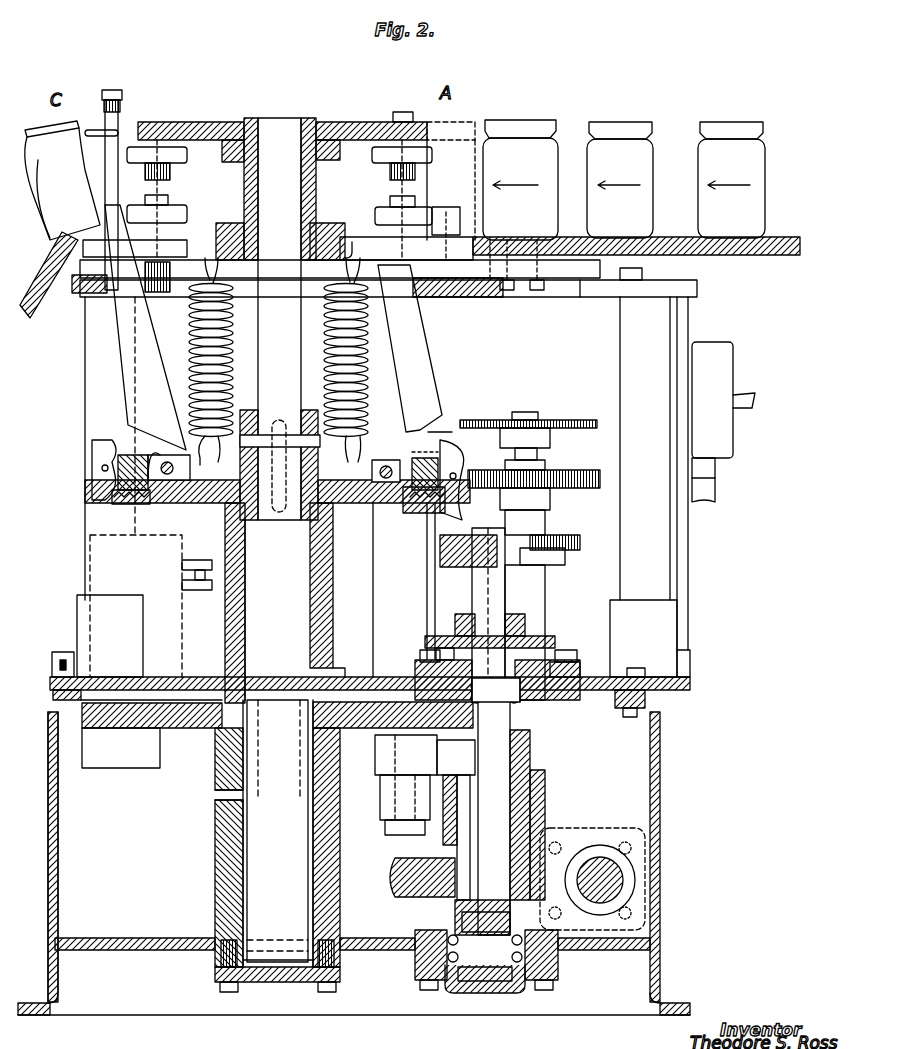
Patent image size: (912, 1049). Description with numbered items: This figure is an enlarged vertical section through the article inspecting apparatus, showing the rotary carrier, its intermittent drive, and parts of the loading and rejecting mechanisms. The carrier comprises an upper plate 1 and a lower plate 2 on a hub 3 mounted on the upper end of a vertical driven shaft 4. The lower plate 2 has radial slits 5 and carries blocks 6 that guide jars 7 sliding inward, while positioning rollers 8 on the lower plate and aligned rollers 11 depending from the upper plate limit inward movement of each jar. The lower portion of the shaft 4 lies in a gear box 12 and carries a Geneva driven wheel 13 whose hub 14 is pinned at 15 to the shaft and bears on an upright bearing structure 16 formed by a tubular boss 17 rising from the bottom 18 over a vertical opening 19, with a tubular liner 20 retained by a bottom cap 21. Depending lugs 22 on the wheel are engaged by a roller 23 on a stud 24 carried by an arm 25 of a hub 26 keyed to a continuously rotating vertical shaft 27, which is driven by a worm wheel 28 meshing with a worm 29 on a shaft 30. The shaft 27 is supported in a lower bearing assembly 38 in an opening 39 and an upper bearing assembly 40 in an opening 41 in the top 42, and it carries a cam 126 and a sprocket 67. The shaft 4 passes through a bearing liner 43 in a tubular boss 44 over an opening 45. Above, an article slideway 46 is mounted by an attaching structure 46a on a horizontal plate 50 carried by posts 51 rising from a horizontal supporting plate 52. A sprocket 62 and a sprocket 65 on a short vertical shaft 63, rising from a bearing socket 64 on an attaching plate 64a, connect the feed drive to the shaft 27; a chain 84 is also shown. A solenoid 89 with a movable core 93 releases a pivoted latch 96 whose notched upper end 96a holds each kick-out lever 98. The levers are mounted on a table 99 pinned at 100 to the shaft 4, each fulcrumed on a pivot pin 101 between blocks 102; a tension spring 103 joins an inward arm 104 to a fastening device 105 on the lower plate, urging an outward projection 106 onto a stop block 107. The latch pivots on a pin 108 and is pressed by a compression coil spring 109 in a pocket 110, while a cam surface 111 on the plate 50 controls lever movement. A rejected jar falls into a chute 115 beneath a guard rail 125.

The upper plate 1 is at (330, 122).
The lower plate 2 is at (334, 261).
The hub 3 is at (317, 190).
The driven shaft 4 is at (279, 319).
The slits 5 is at (176, 257).
The blocks 6 is at (128, 218).
The jars 7 is at (560, 103).
The article positioning rollers 8 is at (183, 215).
The article contacting rollers 11 is at (186, 155).
The gear box 12 is at (60, 836).
The driven wheel 13 is at (193, 728).
The hub 14 is at (214, 780).
The pin 15 is at (214, 800).
The bearing structure 16 is at (206, 882).
The tubular boss 17 is at (342, 928).
The bottom 18 is at (136, 950).
The vertical opening 19 is at (236, 923).
The tubular liner 20 is at (247, 877).
The bottom cap 21 is at (291, 983).
The lugs 22 is at (135, 766).
The roller 23 is at (383, 760).
The stud 24 is at (400, 793).
The projecting arm 25 is at (392, 820).
The hub 26 is at (532, 786).
The vertical shaft 27 is at (488, 600).
The worm wheel 28 is at (396, 876).
The worm 29 is at (640, 878).
The shaft 30 is at (600, 860).
The anti-friction bearing assembly 38 is at (452, 935).
The opening 39 is at (445, 992).
The upper anti-friction bearing assembly 40 is at (518, 710).
The opening 41 is at (525, 700).
The top 42 is at (385, 677).
The bearing liner 43 is at (309, 596).
The tubular boss 44 is at (335, 630).
The opening 45 is at (328, 667).
The article slideway 46 is at (748, 256).
The attaching structure 46a is at (562, 272).
The horizontal plate 50 is at (462, 298).
The posts 51 is at (85, 354).
The horizontal supporting plate 52 is at (690, 692).
The sprocket 62 is at (568, 422).
The short vertical shaft 63 is at (535, 450).
The bearing socket 64 is at (548, 592).
The attaching plate 64a is at (582, 672).
The sprocket 65 is at (562, 540).
The sprocket 67 is at (566, 560).
The chain 84 is at (572, 485).
The solenoid 89 is at (129, 606).
The movable core 93 is at (194, 588).
The pivoted latch 96 is at (95, 470).
The notched upper end portion 96a is at (450, 430).
The kick-out lever 98 is at (128, 376).
The table 99 is at (355, 508).
The pin 100 is at (298, 440).
The pivot pin 101 is at (167, 462).
The blocks 102 is at (163, 503).
The tension spring 103 is at (193, 355).
The inwardly extending arm 104 is at (178, 448).
The fastening device 105 is at (294, 270).
The projection 106 is at (440, 440).
The stop block 107 is at (418, 455).
The pivot pin 108 is at (102, 470).
The compression coil spring 109 is at (112, 498).
The pocket 110 is at (428, 514).
The cam surface 111 is at (165, 295).
The chute 115 is at (40, 300).
The guard rail 125 is at (128, 125).
The cam 126 is at (530, 645).